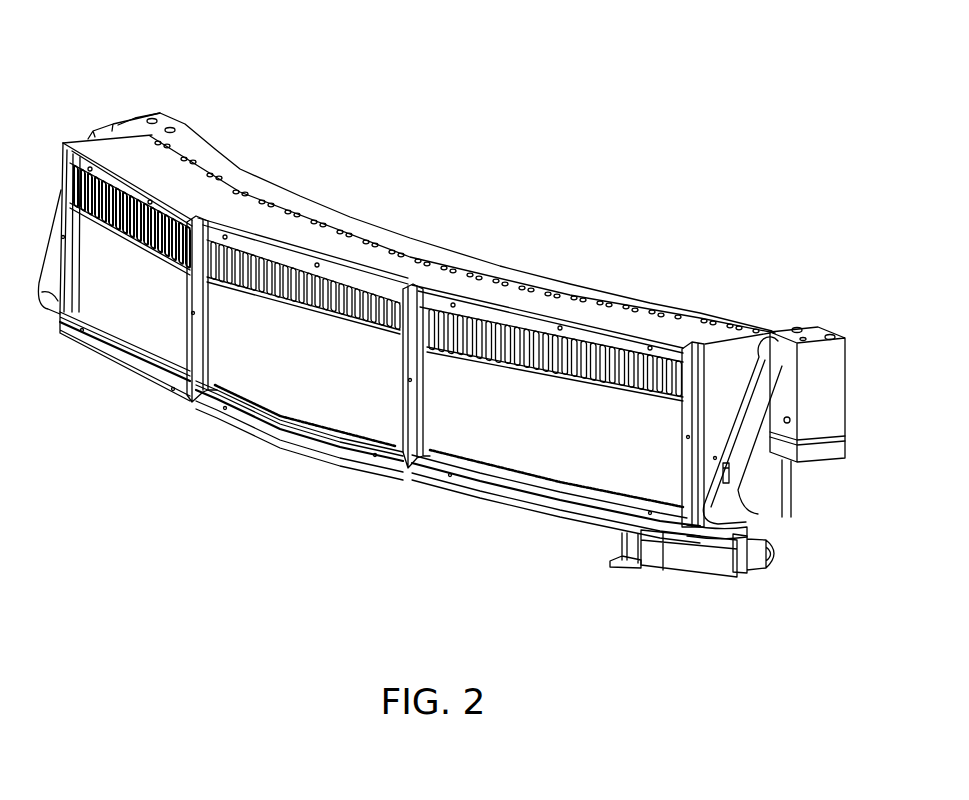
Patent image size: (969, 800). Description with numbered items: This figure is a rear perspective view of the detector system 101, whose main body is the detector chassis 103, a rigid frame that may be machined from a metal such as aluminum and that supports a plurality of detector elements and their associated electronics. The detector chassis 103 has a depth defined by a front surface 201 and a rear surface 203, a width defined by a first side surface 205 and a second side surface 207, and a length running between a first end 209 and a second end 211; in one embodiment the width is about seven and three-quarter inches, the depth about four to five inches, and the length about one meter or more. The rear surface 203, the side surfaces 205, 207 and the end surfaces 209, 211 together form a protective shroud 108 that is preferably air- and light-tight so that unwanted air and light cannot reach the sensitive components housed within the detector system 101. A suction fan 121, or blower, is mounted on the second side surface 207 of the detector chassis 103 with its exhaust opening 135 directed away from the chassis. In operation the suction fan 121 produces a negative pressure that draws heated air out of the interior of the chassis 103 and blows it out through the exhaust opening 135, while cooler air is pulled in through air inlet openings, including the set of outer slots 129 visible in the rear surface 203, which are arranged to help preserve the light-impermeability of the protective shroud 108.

The detector system 101 is at (165, 56).
The first end 209 is at (65, 128).
The first side surface 205 is at (263, 223).
The front surface 201 is at (426, 225).
The detector chassis 103 is at (480, 267).
The outer slots 129 is at (528, 347).
The rear surface 203 is at (280, 385).
The second side surface 207 is at (220, 439).
The protective shroud 108 is at (695, 332).
The second end 211 is at (830, 392).
The suction fan 121 is at (702, 557).
The exhaust opening 135 is at (780, 553).